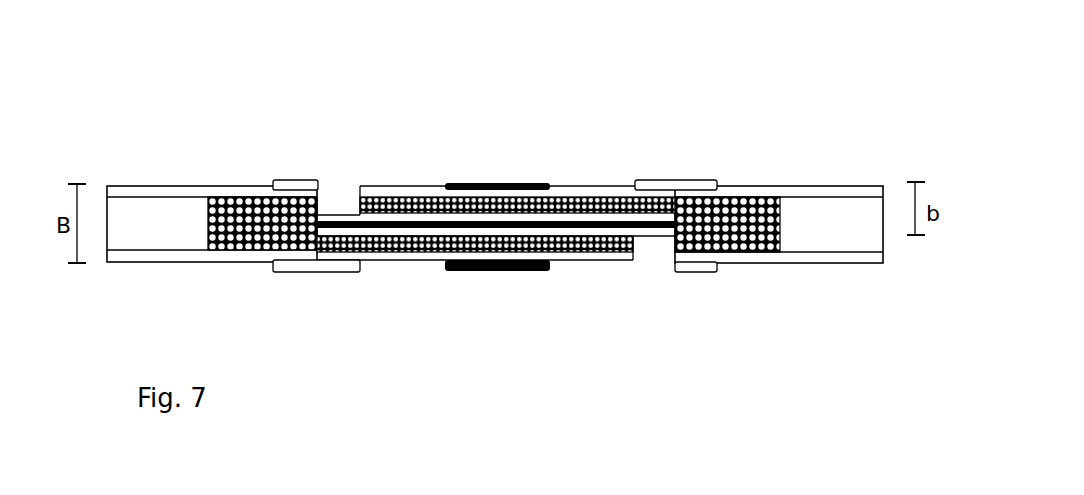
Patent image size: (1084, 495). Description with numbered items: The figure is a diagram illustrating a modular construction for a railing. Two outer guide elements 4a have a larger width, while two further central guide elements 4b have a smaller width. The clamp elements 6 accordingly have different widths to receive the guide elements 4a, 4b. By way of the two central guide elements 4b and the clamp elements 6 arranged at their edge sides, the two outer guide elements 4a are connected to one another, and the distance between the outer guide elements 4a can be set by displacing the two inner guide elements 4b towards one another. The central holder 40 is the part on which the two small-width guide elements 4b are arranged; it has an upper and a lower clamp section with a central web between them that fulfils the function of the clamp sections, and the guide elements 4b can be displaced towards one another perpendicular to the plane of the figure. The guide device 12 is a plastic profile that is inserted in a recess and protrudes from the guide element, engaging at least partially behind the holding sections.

The guide element 4a is at (144, 232).
The guide element 4b is at (558, 187).
The clamp element 6 is at (297, 186).
The guide device 12 is at (235, 225).
The central holder 40 is at (475, 271).